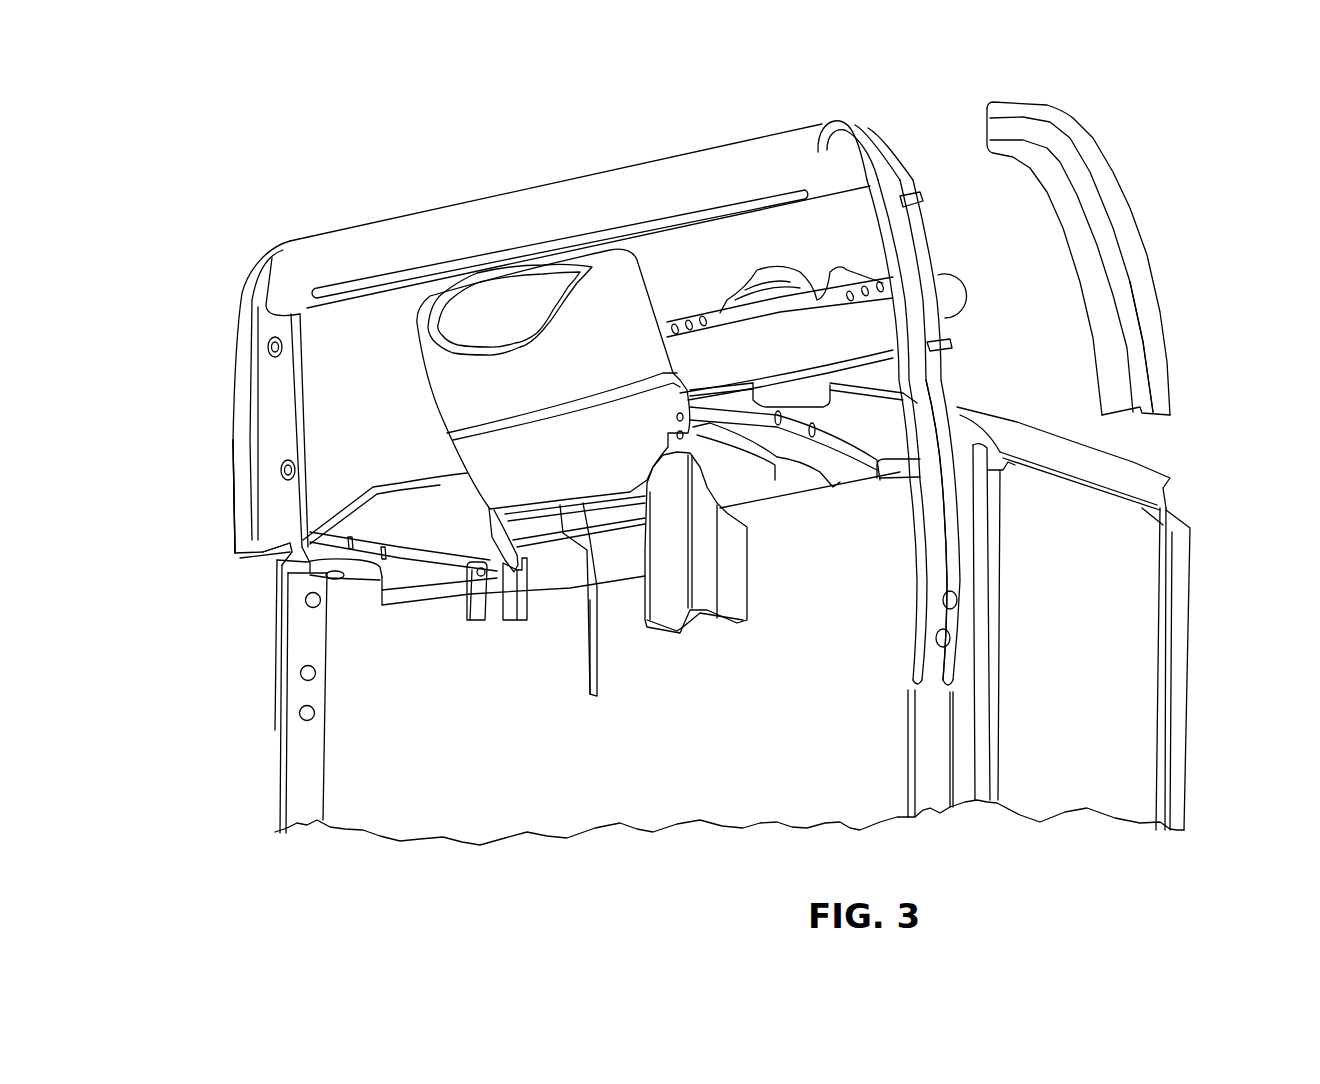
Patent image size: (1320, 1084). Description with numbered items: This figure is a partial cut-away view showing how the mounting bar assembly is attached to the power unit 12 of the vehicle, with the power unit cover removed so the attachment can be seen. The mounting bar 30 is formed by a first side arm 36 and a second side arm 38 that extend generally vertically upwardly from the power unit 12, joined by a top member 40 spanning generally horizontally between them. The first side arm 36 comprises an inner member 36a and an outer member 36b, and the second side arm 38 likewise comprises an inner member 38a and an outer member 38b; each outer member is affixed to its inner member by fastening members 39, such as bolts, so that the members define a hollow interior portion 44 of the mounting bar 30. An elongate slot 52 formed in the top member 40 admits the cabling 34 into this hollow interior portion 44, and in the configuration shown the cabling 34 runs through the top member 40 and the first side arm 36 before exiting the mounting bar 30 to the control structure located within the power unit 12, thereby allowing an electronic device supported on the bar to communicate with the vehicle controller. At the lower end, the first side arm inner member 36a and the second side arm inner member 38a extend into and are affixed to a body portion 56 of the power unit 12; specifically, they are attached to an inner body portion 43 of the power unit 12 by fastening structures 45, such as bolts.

The power unit 12 is at (1222, 728).
The mounting bar 30 is at (328, 216).
The cabling 34 is at (948, 386).
The first side arm 36 is at (1185, 266).
The first side arm inner member 36a is at (958, 555).
The first side arm outer member 36b is at (1115, 358).
The second side arm 38 is at (213, 415).
The second side arm inner member 38a is at (262, 545).
The second side arm outer member 38b is at (245, 502).
The fastening members 39 is at (906, 195).
The top member 40 is at (730, 163).
The inner body portion 43 is at (337, 635).
The hollow interior portion 44 is at (828, 135).
The fastening structures 45 is at (301, 673).
The elongate slot 52 is at (417, 268).
The body portion 56 is at (250, 776).